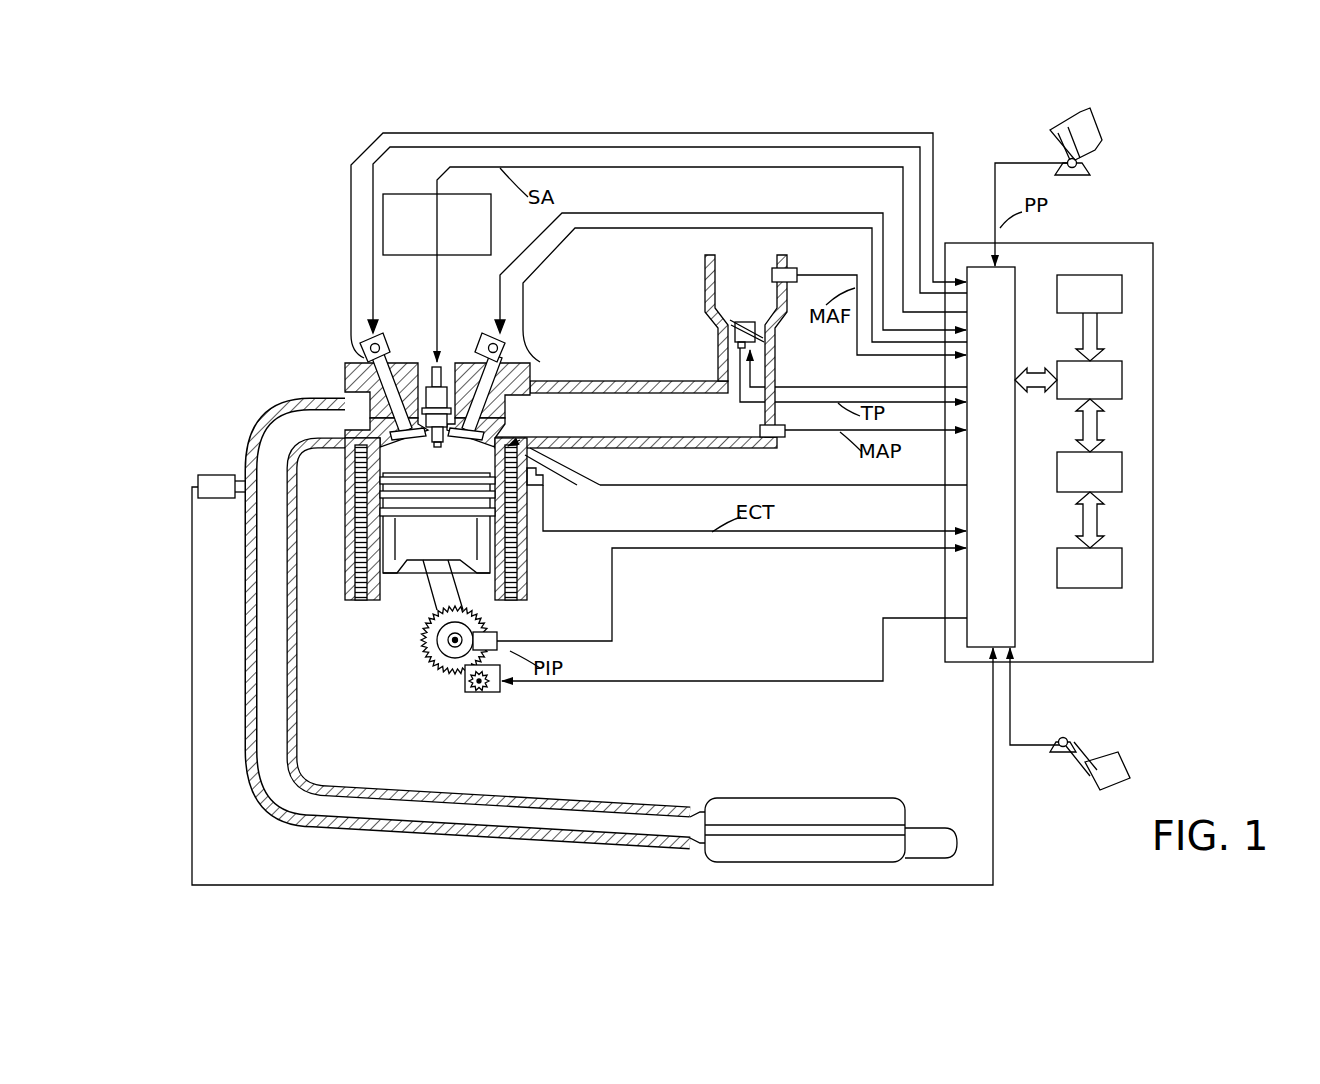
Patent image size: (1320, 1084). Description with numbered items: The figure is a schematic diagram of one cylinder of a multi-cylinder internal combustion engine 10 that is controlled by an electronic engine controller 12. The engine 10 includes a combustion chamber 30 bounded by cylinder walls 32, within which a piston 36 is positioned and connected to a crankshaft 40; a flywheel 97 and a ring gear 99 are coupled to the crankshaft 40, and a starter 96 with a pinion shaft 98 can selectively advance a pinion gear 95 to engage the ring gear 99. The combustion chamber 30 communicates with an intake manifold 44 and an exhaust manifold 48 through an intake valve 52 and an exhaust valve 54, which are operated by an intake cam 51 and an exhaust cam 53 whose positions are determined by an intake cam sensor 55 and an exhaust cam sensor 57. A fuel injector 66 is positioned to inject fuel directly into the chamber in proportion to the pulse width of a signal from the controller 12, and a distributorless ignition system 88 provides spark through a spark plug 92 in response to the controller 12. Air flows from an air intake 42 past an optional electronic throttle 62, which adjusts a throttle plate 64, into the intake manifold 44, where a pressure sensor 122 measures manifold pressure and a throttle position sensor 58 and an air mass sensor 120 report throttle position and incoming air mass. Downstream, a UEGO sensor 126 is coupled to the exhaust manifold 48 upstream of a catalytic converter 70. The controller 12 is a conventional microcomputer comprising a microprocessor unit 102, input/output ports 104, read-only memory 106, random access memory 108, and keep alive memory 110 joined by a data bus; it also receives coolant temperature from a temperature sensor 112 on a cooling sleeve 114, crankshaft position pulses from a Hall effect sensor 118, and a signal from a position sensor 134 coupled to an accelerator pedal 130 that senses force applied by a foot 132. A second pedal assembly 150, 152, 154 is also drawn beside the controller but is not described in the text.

The internal combustion engine 10 is at (286, 322).
The electronic engine controller 12 is at (1088, 439).
The combustion chamber 30 is at (360, 555).
The cylinder walls 32 is at (380, 585).
The piston 36 is at (420, 548).
The crankshaft 40 is at (433, 660).
The air intake 42 is at (732, 301).
The intake manifold 44 is at (675, 425).
The exhaust manifold 48 is at (304, 430).
The intake cam 51 is at (500, 356).
The intake valve 52 is at (485, 422).
The exhaust cam 53 is at (365, 358).
The exhaust valve 54 is at (395, 435).
The intake cam sensor 55 is at (502, 389).
The exhaust cam sensor 57 is at (362, 346).
The throttle position sensor 58 is at (718, 352).
The electronic throttle 62 is at (760, 333).
The throttle plate 64 is at (735, 326).
The fuel injector 66 is at (555, 472).
The catalytic converter 70 is at (745, 797).
The distributorless ignition system 88 is at (396, 194).
The spark plug 92 is at (442, 365).
The pinion gear 95 is at (464, 702).
The starter 96 is at (479, 702).
The flywheel 97 is at (433, 660).
The pinion shaft 98 is at (475, 690).
The ring gear 99 is at (450, 676).
The microprocessor unit 102 is at (1122, 378).
The input/output ports 104 is at (1018, 272).
The read-only memory 106 is at (1122, 292).
The random access memory 108 is at (1122, 470).
The keep alive memory 110 is at (1122, 572).
The temperature sensor 112 is at (543, 490).
The cooling sleeve 114 is at (520, 550).
The Hall effect sensor 118 is at (497, 634).
The air mass sensor 120 is at (790, 268).
The pressure sensor 122 is at (785, 437).
The Universal Exhaust Gas Oxygen (UEGO) sensor 126 is at (198, 480).
The accelerator pedal 130 is at (1104, 145).
The foot 132 is at (1105, 130).
The position sensor 134 is at (1085, 165).
The brake pedal position sensor 150 is at (1071, 750).
The brake pedal 152 is at (1105, 750).
The brake pedal pivot 154 is at (1060, 738).